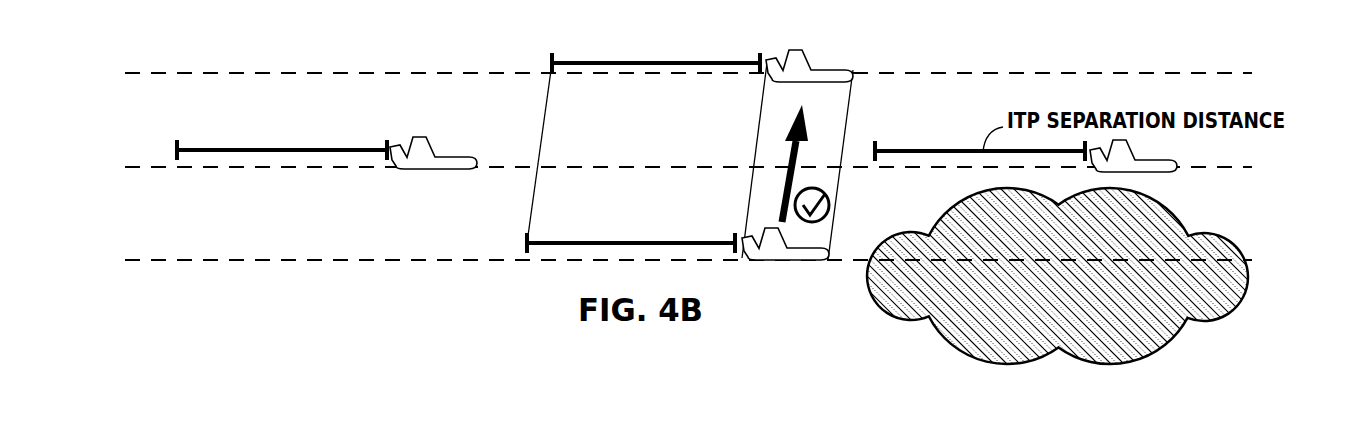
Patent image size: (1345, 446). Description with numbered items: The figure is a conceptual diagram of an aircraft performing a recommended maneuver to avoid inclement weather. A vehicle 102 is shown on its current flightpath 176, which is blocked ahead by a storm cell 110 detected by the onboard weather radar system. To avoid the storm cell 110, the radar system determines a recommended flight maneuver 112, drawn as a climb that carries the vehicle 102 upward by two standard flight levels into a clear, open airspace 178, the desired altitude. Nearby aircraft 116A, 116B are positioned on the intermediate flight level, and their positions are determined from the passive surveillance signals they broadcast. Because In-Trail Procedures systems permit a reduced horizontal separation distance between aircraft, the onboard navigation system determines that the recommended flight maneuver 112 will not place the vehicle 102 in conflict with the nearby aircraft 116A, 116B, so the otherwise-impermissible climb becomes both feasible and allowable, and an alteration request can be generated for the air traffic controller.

The vehicle 102 is at (803, 50).
The storm cell 110 is at (1077, 289).
The recommended flight maneuver 112 is at (785, 190).
The nearby aircraft 116A is at (417, 138).
The nearby aircraft 116B is at (1175, 172).
The current flightpath 176 is at (407, 263).
The open airspace 178 is at (457, 72).